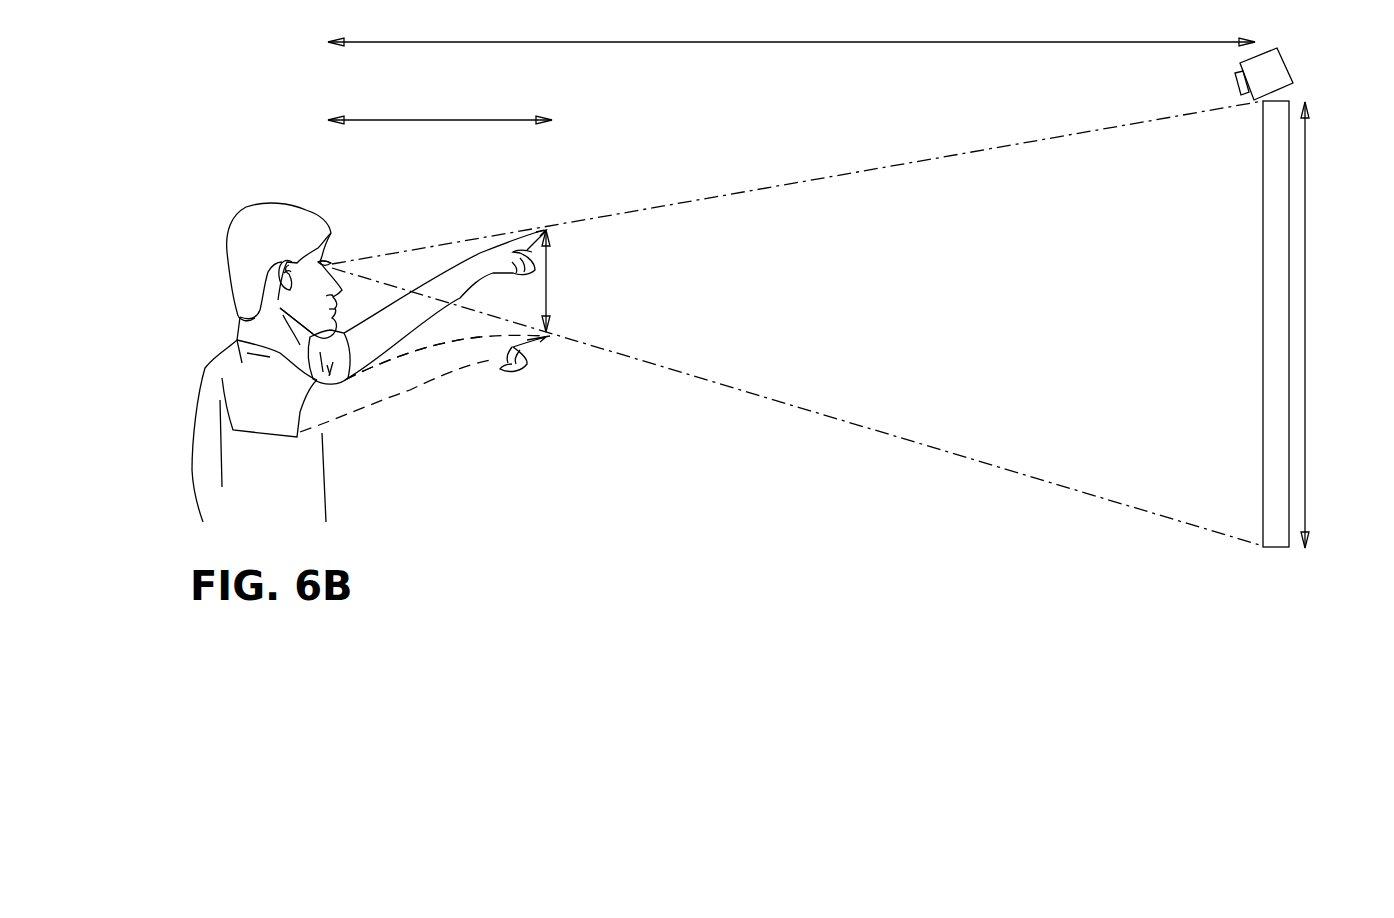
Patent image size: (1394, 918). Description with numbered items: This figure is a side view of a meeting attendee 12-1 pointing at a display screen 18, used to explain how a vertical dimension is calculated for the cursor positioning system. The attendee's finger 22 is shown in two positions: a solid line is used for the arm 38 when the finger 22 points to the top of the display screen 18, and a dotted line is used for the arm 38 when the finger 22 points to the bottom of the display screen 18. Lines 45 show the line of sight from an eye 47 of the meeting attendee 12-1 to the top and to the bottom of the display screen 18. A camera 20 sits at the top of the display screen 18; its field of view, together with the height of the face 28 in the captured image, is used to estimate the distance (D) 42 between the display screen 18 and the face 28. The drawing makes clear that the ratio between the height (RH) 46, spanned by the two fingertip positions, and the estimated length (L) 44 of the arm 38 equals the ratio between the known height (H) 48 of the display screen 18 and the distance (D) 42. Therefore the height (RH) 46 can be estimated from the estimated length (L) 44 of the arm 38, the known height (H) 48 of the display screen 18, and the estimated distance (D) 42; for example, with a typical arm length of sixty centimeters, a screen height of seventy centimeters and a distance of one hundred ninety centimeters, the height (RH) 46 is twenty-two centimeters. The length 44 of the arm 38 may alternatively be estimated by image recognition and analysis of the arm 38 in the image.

The meeting attendee 12-1 is at (222, 373).
The display screen 18 is at (1263, 300).
The camera 20 is at (1289, 73).
The finger 22 is at (546, 228).
The face 28 is at (347, 292).
The arm 38 is at (400, 332).
The distance (D) 42 is at (687, 43).
The length (L) of the arm 44 is at (470, 122).
The lines of sight 45 is at (862, 173).
The height (RH) 46 is at (552, 337).
The eye 47 is at (331, 263).
The height (H) of the display screen 48 is at (1306, 222).